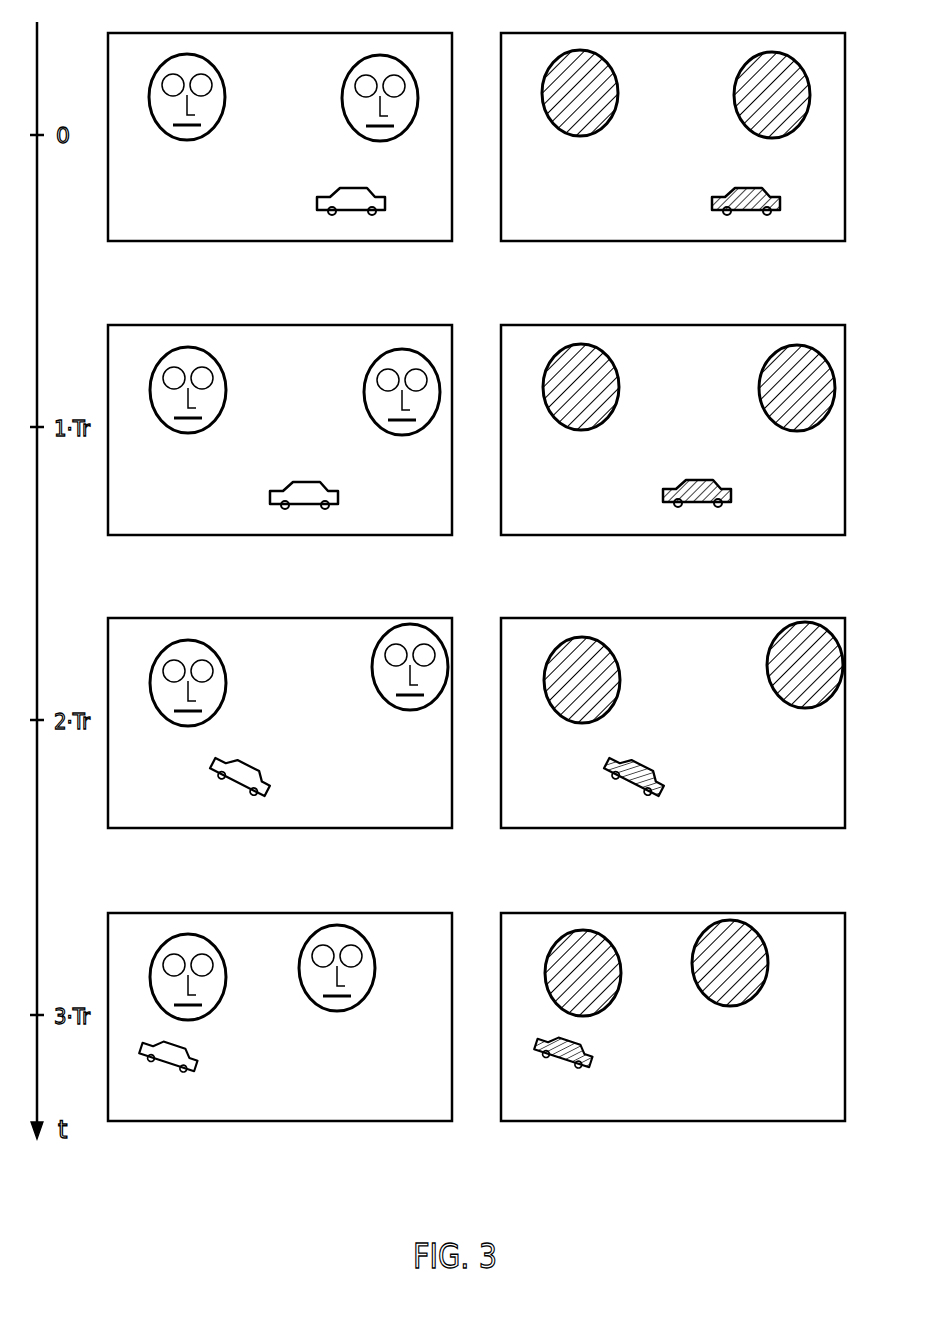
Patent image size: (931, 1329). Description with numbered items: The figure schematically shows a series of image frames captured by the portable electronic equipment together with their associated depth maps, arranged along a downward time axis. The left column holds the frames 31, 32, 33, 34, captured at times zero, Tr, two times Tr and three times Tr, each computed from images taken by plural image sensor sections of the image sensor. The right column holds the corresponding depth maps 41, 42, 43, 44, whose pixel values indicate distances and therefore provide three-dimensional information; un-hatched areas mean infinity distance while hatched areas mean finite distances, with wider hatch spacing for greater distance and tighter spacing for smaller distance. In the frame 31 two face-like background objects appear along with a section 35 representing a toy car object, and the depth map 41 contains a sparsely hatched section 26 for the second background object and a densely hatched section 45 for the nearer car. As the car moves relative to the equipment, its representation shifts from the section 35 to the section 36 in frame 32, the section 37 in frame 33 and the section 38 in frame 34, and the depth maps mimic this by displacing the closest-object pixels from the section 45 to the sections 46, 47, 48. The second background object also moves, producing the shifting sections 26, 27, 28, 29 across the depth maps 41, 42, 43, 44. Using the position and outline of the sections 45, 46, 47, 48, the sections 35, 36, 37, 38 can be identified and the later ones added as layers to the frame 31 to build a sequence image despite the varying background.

The section 26 is at (742, 75).
The section 27 is at (764, 365).
The section 28 is at (776, 645).
The section 29 is at (761, 934).
The frame 31 is at (108, 227).
The frame 32 is at (108, 521).
The frame 33 is at (108, 815).
The frame 34 is at (108, 1109).
The section 35 is at (317, 203).
The section 36 is at (270, 497).
The section 37 is at (211, 764).
The section 38 is at (201, 1064).
The depth map 41 is at (501, 227).
The depth map 42 is at (501, 521).
The depth map 43 is at (501, 815).
The depth map 44 is at (501, 1109).
The section 45 is at (712, 203).
The section 46 is at (663, 496).
The section 47 is at (605, 762).
The section 48 is at (598, 1062).